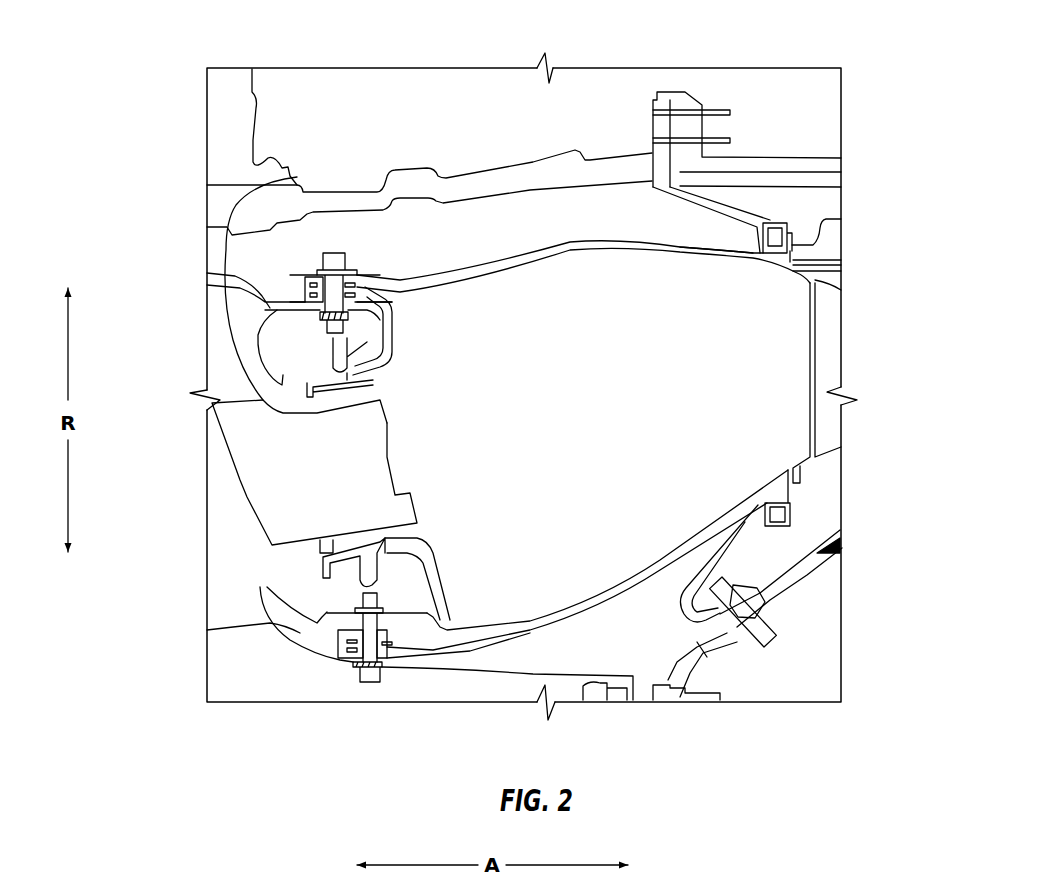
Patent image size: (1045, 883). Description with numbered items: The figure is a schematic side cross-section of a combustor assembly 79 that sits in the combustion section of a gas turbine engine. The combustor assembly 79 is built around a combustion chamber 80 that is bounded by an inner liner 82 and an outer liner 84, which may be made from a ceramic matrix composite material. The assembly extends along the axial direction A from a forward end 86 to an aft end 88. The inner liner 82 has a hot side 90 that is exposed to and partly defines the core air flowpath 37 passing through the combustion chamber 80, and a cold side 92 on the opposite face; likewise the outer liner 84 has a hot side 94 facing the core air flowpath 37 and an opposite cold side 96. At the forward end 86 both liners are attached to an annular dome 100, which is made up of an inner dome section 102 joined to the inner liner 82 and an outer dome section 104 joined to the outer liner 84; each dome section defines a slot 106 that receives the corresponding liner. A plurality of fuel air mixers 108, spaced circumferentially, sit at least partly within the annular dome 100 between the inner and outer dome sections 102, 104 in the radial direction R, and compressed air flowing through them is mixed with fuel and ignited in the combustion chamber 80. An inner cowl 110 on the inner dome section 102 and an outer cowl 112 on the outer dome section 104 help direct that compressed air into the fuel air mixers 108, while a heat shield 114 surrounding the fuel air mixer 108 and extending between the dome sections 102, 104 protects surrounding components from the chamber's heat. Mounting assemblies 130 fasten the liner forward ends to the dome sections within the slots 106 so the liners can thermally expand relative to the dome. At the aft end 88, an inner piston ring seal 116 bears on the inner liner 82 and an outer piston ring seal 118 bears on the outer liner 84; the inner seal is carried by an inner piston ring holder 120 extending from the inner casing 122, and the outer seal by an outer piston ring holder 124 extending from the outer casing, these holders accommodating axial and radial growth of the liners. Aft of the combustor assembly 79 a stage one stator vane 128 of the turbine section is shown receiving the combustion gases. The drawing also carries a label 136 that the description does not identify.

The core air flowpath 37 is at (790, 364).
The combustor assembly 79 is at (595, 100).
The combustion chamber 80 is at (532, 428).
The inner liner 82 is at (643, 566).
The outer liner 84 is at (578, 245).
The forward end 86 is at (263, 263).
The aft end 88 is at (803, 241).
The hot side 90 is at (702, 528).
The cold side 92 is at (604, 611).
The hot side 94 is at (643, 254).
The cold side 96 is at (491, 252).
The annular dome 100 is at (270, 650).
The inner dome section 102 is at (320, 640).
The outer dome section 104 is at (268, 302).
The slot 106 is at (363, 274).
The fuel air mixer 108 is at (303, 470).
The inner cowl 110 is at (286, 626).
The outer cowl 112 is at (256, 322).
The heat shield 114 is at (392, 342).
The inner piston ring seal 116 is at (797, 510).
The outer piston ring seal 118 is at (773, 249).
The inner piston ring holder 120 is at (742, 545).
The inner casing 122 is at (697, 661).
The outer piston ring holder 124 is at (737, 212).
The stage one stator vane 128 is at (822, 340).
The mounting assembly 130 is at (337, 246).
The outer case 136 is at (533, 180).